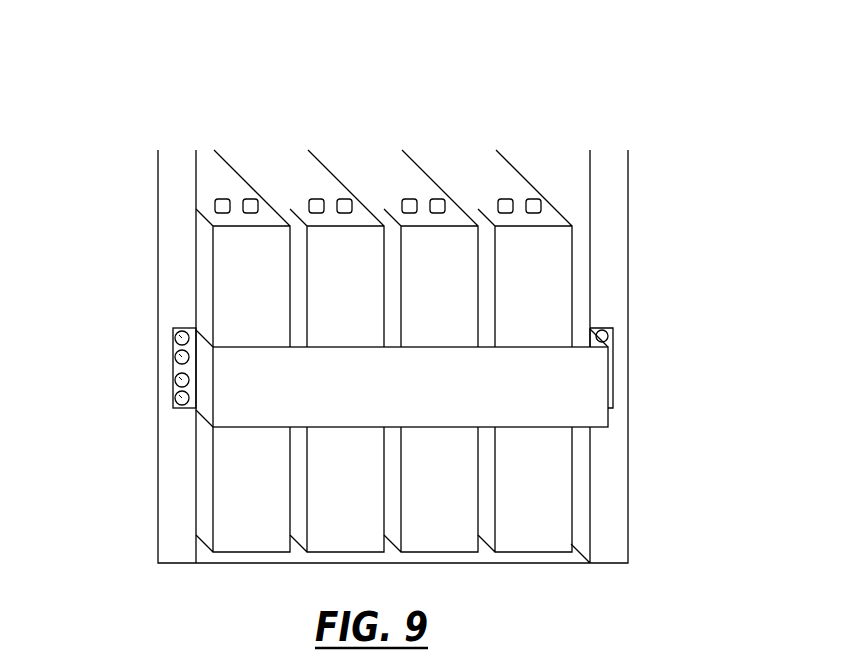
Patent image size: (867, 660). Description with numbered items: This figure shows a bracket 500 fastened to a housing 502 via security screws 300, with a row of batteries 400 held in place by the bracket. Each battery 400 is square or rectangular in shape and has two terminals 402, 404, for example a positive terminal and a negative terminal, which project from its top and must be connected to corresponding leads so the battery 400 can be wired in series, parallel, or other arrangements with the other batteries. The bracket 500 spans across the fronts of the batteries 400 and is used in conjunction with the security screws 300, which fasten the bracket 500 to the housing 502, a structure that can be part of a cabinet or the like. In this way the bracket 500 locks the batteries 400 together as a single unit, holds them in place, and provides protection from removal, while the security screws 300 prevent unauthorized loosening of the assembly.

The battery 400 is at (443, 308).
The terminal 402 is at (505, 199).
The terminal 404 is at (537, 199).
The bracket 500 is at (560, 389).
The housing 502 is at (183, 175).
The security screw 300 is at (173, 340).